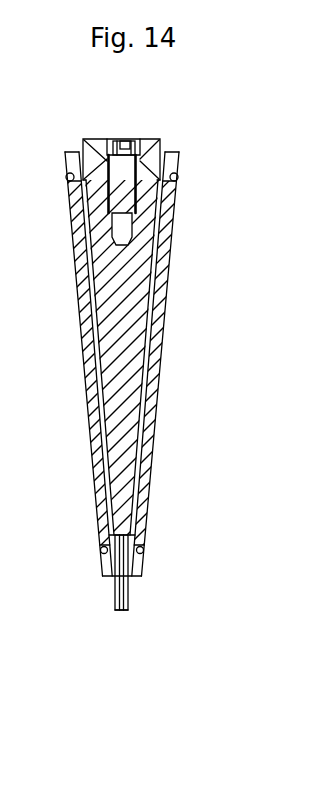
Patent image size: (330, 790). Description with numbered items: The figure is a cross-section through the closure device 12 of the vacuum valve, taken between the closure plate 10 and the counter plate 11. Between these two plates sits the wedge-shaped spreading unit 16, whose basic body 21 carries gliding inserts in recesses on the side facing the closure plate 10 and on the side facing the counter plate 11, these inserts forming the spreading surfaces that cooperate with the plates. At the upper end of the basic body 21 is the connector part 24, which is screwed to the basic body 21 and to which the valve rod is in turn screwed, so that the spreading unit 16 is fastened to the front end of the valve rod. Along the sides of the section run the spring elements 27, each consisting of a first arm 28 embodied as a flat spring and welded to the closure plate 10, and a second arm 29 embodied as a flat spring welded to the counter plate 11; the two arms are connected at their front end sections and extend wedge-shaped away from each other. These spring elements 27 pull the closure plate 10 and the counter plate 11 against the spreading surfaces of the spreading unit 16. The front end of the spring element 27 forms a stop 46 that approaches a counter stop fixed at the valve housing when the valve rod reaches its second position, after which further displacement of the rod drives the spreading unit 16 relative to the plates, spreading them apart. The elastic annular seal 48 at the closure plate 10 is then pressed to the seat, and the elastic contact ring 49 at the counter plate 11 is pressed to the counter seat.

The closure plate 10 is at (93, 398).
The counter plate 11 is at (163, 378).
The closure device 12 is at (94, 129).
The spreading unit 16 is at (152, 331).
The basic body 21 is at (127, 297).
The connector part 24 is at (156, 150).
The spring element 27 is at (134, 588).
The first arm 28 is at (90, 307).
The second arm 29 is at (157, 261).
The stop 46 is at (123, 610).
The elastic annular seal 48 is at (67, 176).
The elastic contact ring 49 is at (177, 176).